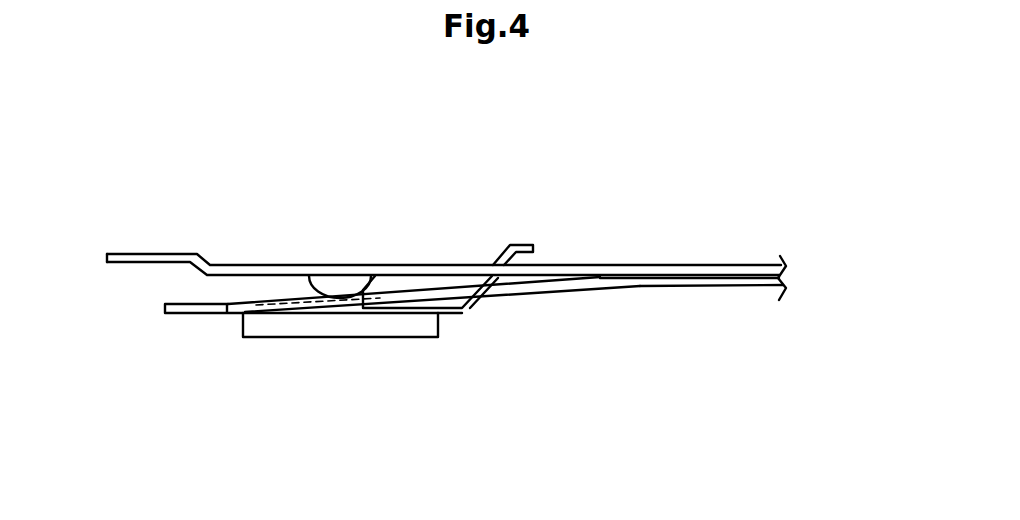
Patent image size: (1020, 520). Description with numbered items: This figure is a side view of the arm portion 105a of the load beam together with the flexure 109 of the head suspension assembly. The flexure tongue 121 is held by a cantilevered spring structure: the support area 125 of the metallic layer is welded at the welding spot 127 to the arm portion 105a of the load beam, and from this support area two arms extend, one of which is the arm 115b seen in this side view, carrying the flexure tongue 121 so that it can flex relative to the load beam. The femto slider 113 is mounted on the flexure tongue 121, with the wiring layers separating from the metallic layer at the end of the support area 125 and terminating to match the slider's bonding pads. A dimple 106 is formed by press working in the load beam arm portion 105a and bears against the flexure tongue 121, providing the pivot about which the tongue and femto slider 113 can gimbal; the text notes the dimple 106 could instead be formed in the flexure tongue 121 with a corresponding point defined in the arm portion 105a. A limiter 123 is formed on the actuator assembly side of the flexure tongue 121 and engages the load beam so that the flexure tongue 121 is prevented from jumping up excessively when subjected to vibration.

The flexure 109 is at (219, 388).
The arm portion of the load beam 105a is at (398, 275).
The dimple 106 is at (331, 290).
The limiter 123 is at (524, 245).
The welding spot 127 is at (730, 265).
The support area 125 is at (742, 287).
The arm 115b is at (453, 308).
The flexure tongue 121 is at (406, 309).
The femto slider 113 is at (353, 328).